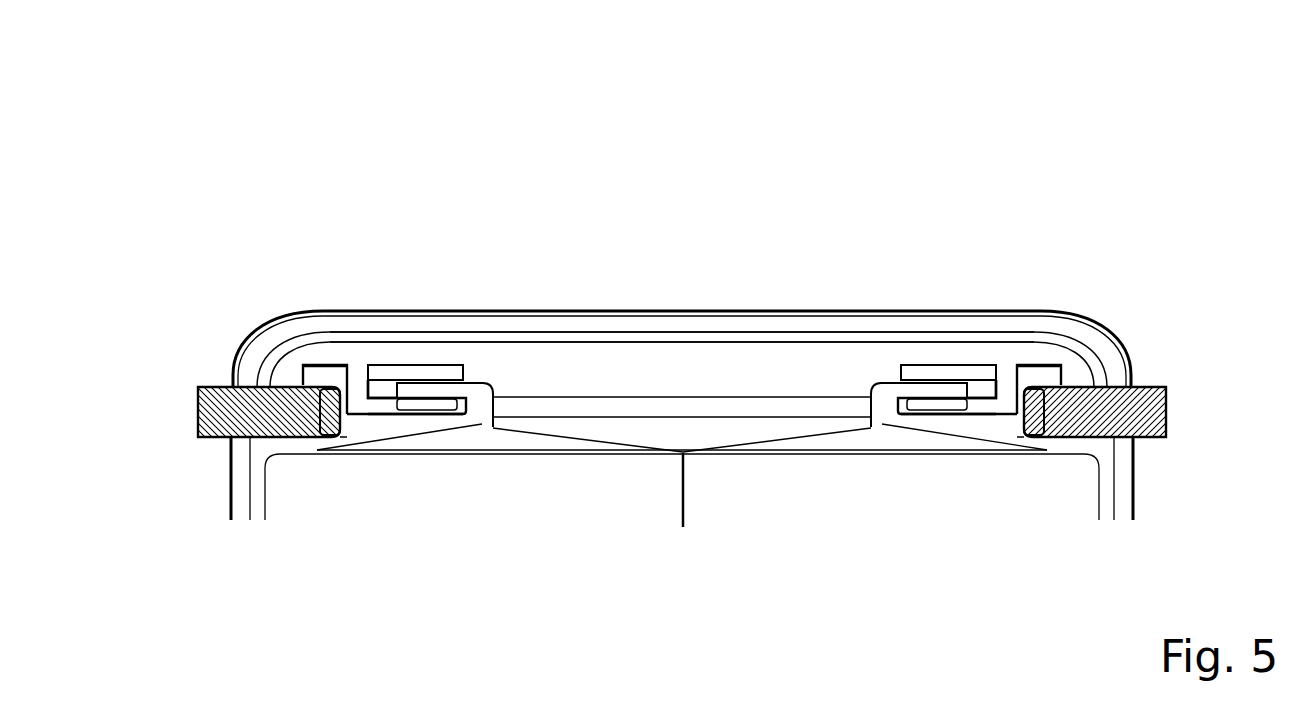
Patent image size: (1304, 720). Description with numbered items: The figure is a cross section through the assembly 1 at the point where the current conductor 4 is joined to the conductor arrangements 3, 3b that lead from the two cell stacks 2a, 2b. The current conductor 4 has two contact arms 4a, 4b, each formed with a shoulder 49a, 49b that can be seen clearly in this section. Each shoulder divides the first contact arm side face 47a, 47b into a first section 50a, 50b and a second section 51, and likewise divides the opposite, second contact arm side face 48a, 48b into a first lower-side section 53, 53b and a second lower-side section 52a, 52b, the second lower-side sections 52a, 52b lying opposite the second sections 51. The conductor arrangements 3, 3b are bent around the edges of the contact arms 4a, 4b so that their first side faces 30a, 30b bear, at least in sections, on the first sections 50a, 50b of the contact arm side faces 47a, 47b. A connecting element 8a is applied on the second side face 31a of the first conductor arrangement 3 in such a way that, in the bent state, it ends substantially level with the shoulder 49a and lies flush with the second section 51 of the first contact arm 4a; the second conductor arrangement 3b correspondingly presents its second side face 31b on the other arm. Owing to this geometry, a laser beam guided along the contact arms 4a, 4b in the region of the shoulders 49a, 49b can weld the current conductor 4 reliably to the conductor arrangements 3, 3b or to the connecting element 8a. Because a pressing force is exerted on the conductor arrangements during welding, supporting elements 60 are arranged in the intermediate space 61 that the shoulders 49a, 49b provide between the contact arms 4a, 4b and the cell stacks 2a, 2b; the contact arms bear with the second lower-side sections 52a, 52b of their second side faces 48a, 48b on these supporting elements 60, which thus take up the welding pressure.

The electronic device 1 is at (98, 104).
The cell stack 2a is at (620, 515).
The cell stack 2b is at (767, 525).
The conductor arrangement 3 is at (512, 375).
The conductor arrangement 3b is at (870, 382).
The current conductor 4 is at (692, 396).
The contact arm 4a is at (422, 415).
The contact arm 4b is at (918, 414).
The connecting element 8a is at (422, 365).
The first side face 30a is at (445, 400).
The first side face 30b is at (952, 405).
The second side face 31a is at (473, 370).
The second side face 31b is at (923, 374).
The first contact arm side face 47a is at (497, 193).
The first contact arm side face 47b is at (1085, 210).
The second contact arm side face 48a is at (513, 588).
The second contact arm side face 48b is at (1093, 575).
The shoulder 49a is at (357, 368).
The shoulder 49b is at (997, 382).
The first section 50a is at (381, 390).
The first section 50b is at (987, 388).
The second section 51 is at (338, 355).
The second lower-side section 52a is at (316, 395).
The second lower-side section 52b is at (1048, 395).
The first lower-side section 53 is at (400, 423).
The first lower-side section 53b is at (928, 423).
The supporting element 60 is at (222, 387).
The intermediate space 61 is at (353, 428).